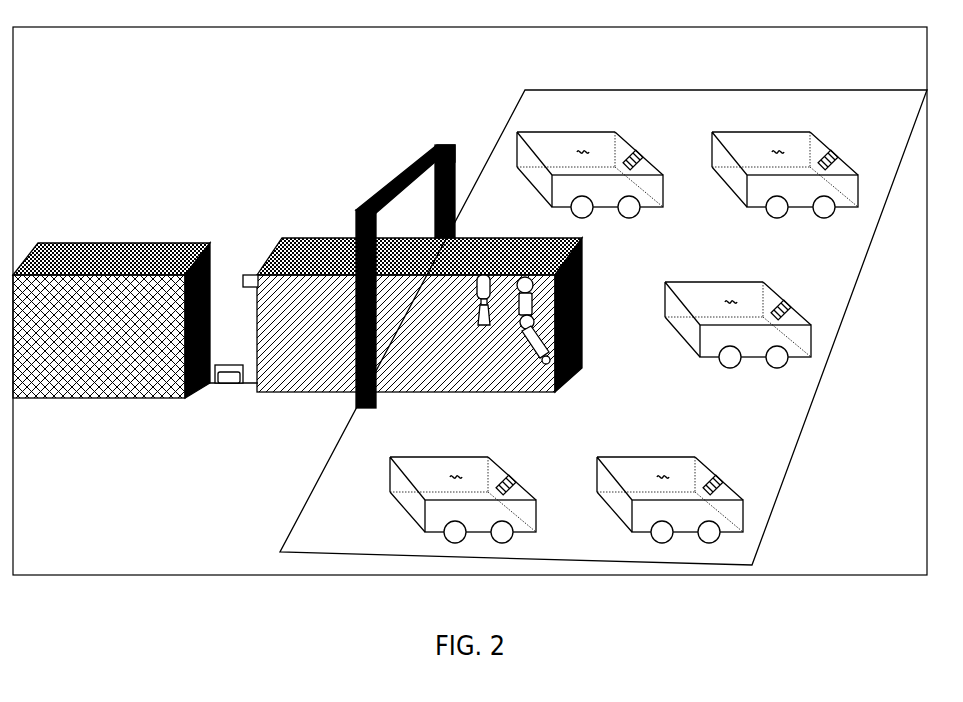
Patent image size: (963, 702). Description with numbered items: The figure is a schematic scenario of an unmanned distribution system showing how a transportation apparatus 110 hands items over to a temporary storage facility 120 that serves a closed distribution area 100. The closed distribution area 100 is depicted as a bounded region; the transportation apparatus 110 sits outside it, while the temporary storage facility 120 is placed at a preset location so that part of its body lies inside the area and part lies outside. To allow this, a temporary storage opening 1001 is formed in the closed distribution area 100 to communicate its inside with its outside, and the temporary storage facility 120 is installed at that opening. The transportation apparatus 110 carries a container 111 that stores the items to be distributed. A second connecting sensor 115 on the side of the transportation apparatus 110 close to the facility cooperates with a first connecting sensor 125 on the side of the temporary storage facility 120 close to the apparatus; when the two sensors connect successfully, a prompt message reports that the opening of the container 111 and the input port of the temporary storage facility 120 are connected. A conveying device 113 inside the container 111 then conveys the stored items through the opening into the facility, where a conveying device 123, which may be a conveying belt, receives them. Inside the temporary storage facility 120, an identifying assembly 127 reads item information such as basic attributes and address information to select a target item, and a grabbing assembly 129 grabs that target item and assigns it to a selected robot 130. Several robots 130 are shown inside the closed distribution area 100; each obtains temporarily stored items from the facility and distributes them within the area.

The closed distribution area 100 is at (595, 90).
The transportation apparatus 110 is at (125, 287).
The container 111 is at (240, 405).
The conveying device 113 is at (203, 383).
The second connecting sensor 115 is at (215, 252).
The temporary storage facility 120 is at (305, 238).
The conveying device 123 is at (243, 385).
The first connecting sensor 125 is at (248, 272).
The identifying assembly 127 is at (483, 275).
The grabbing assembly 129 is at (540, 358).
The temporary storage opening 1001 is at (443, 145).
The robot 130 is at (638, 333).